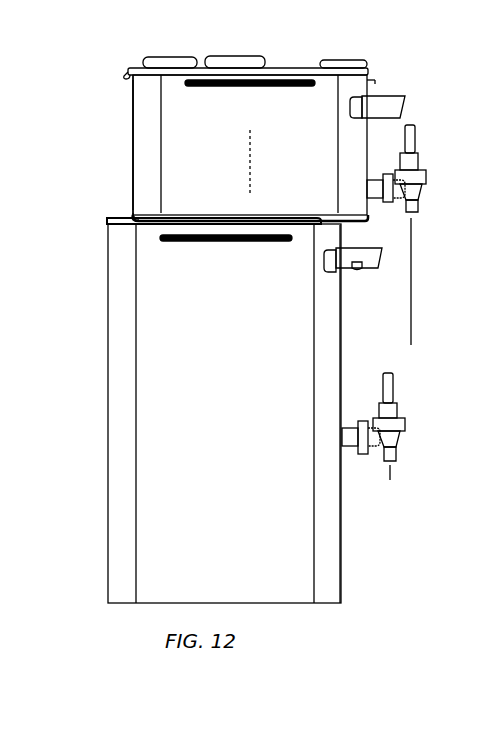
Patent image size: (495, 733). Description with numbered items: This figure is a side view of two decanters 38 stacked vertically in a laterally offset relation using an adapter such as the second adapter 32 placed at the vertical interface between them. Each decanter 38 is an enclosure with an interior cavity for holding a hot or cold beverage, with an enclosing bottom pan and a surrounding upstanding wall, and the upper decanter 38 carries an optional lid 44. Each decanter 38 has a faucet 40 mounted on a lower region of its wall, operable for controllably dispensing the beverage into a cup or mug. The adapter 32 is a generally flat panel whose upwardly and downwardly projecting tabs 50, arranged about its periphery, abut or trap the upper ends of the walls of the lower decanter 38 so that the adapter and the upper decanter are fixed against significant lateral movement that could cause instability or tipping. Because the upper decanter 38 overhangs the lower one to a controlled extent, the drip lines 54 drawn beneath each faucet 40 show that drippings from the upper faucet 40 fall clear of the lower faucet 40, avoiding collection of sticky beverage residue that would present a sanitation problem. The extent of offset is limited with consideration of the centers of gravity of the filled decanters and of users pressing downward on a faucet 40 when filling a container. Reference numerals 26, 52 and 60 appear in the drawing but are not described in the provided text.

The upper container 26 is at (252, 158).
The second adapter 32 is at (117, 213).
The decanter 38 is at (130, 118).
The faucet 40 is at (424, 170).
The lid 44 is at (315, 57).
The tab 50 is at (105, 228).
The spout 52 is at (378, 266).
The drip line 54 is at (415, 320).
The spout 60 is at (133, 212).